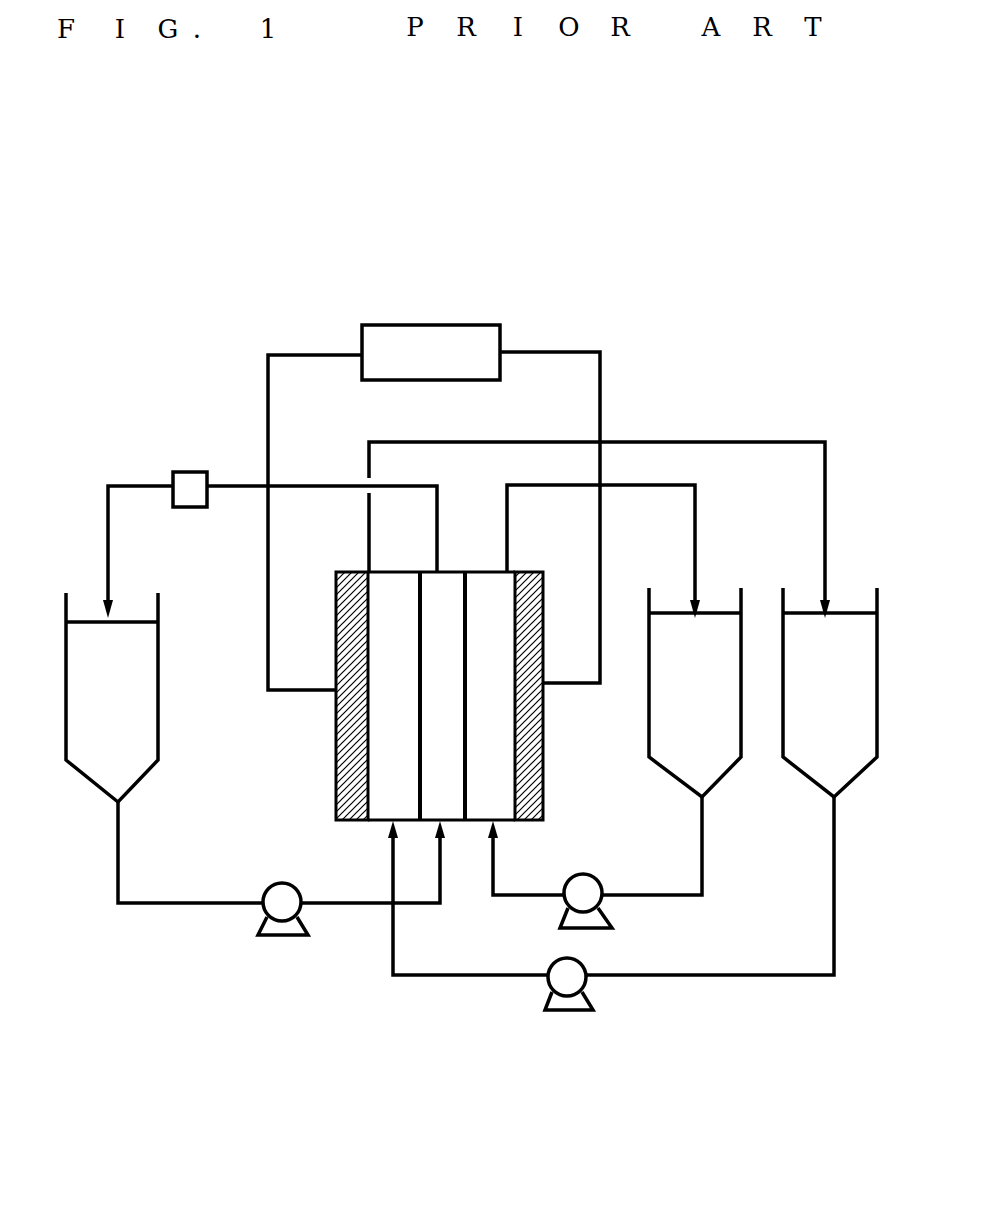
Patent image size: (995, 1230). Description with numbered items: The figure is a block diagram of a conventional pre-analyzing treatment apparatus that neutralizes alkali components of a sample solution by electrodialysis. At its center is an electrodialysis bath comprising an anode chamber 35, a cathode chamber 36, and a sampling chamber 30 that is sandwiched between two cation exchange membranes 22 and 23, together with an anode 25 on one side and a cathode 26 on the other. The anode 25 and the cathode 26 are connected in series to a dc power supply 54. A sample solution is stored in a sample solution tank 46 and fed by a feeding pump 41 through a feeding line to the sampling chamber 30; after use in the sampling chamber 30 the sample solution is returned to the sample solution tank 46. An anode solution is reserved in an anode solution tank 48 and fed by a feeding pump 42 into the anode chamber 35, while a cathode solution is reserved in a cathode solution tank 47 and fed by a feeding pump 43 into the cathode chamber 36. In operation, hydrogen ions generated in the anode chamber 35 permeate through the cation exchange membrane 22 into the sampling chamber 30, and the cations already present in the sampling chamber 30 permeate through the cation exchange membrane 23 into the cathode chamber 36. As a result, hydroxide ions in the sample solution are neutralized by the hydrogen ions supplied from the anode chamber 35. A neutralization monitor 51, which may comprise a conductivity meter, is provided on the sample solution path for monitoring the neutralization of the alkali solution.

The cation exchange membrane 22 is at (418, 568).
The cation exchange membrane 23 is at (463, 568).
The anode 25 is at (337, 770).
The cathode 26 is at (543, 750).
The sampling chamber 30 is at (442, 696).
The anode chamber 35 is at (394, 696).
The cathode chamber 36 is at (490, 696).
The feeding pump 41 is at (282, 937).
The feeding pump 42 is at (567, 1012).
The feeding pump 43 is at (592, 874).
The sample solution tank 46 is at (160, 692).
The cathode solution tank 47 is at (728, 773).
The anode solution tank 48 is at (860, 773).
The neutralization monitor 51 is at (188, 470).
The dc power supply 54 is at (415, 325).